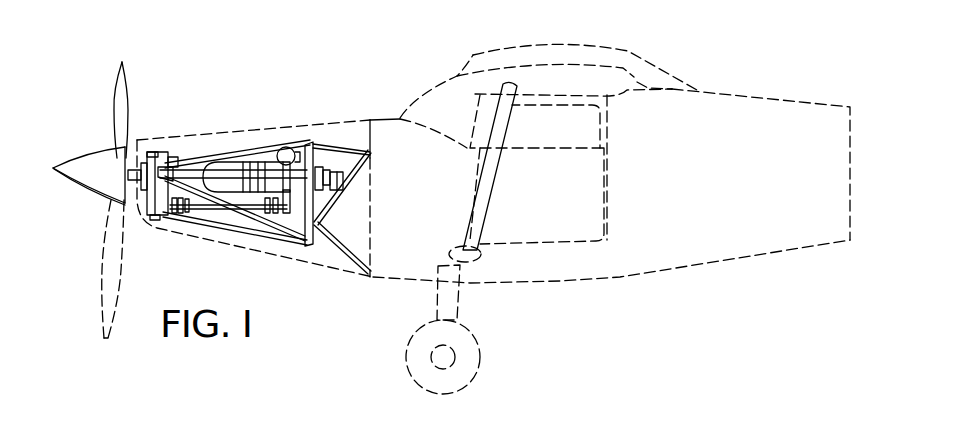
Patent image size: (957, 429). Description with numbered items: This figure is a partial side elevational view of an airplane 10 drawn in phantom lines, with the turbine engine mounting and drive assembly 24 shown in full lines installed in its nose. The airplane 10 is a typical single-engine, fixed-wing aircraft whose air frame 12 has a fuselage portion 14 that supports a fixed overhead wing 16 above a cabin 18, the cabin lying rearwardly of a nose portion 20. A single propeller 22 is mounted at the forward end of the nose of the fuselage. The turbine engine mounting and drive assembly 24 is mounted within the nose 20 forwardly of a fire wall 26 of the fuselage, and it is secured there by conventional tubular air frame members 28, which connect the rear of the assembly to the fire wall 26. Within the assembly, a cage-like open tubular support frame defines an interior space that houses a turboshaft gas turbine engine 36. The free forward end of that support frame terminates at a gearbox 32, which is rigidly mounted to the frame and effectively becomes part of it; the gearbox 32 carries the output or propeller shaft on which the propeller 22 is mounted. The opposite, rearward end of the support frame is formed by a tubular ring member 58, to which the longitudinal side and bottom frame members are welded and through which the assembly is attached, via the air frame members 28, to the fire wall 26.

The airplane 10 is at (705, 57).
The air frame 12 is at (760, 86).
The fuselage portion 14 is at (614, 278).
The fixed overhead wing 16 is at (473, 57).
The cabin 18 is at (453, 130).
The nose portion 20 is at (177, 134).
The propeller 22 is at (112, 104).
The turbine engine mounting and drive assembly 24 is at (253, 134).
The fire wall 26 is at (366, 128).
The tubular air frame members 28 is at (370, 179).
The gearbox 32 is at (158, 151).
The turboshaft gas turbine engine 36 is at (231, 155).
The tubular ring member 58 is at (313, 244).